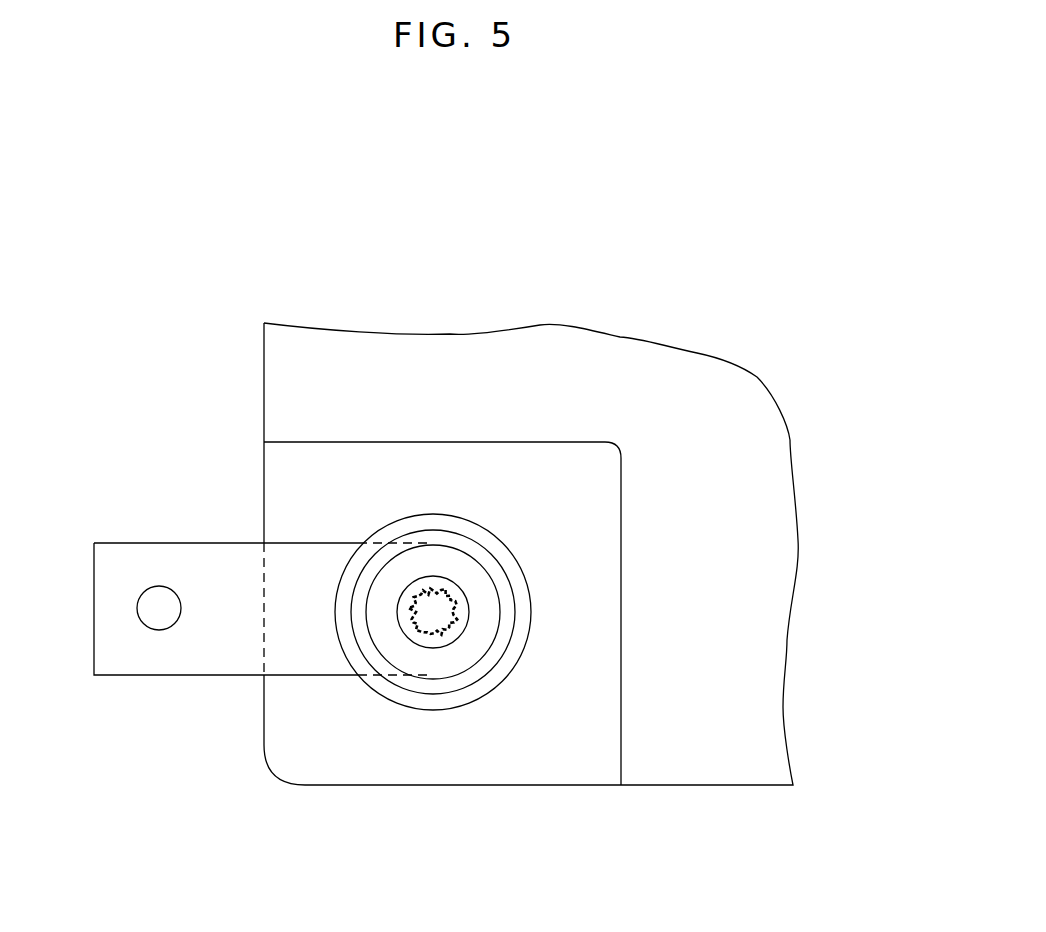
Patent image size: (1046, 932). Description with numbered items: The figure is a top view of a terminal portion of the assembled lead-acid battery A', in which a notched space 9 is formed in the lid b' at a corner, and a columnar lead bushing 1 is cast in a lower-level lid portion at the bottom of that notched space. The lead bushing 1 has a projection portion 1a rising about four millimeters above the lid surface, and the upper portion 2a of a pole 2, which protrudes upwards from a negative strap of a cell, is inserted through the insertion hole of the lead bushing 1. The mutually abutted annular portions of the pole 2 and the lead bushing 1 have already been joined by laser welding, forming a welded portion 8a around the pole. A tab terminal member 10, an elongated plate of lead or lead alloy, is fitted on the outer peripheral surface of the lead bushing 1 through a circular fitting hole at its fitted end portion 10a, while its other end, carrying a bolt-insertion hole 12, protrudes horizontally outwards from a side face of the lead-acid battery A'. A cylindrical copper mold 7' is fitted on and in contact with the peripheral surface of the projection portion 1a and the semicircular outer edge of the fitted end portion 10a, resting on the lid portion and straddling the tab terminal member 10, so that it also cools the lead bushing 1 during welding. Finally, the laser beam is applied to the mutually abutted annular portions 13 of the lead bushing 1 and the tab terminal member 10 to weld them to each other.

The lead-acid battery A' is at (474, 523).
The lid b' is at (559, 554).
The lead bushing 1 is at (475, 448).
The projection portion 1a is at (455, 594).
The pole 2 is at (428, 607).
The upper portion of the pole 2a is at (433, 612).
The cylindrical mold 7' is at (430, 687).
The welded portion 8a is at (438, 635).
The notched space 9 is at (552, 764).
The tab terminal member 10 is at (203, 568).
The fitted end portion 10a is at (487, 627).
The bolt-insertion hole 12 is at (152, 603).
The mutually abutted annular portions 13 is at (460, 637).